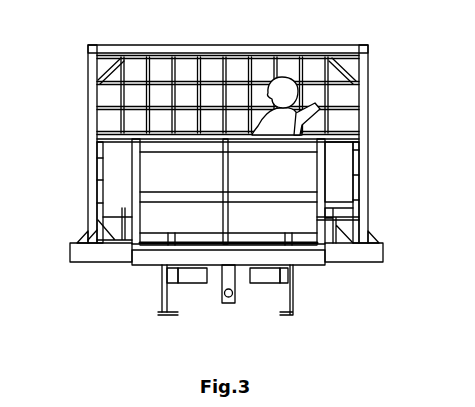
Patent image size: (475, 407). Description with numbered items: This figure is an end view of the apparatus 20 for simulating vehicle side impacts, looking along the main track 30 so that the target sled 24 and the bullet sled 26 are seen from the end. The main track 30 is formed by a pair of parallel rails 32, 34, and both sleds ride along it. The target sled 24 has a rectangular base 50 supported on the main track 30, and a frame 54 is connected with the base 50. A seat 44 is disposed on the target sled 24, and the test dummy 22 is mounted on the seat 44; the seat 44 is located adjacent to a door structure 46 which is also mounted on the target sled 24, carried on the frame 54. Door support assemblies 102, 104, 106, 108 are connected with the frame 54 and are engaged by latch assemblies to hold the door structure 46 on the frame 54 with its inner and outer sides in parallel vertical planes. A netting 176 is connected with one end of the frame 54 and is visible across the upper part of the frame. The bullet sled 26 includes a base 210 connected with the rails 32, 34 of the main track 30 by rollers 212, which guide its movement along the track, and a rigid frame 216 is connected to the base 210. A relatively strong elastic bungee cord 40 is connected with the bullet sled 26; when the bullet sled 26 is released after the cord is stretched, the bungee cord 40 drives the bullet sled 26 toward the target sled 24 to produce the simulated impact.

The apparatus 20 is at (383, 50).
The test dummy 22 is at (257, 126).
The target sled 24 is at (93, 45).
The bullet sled 26 is at (131, 188).
The main track 30 is at (157, 317).
The rail 32 is at (160, 300).
The rail 34 is at (295, 303).
The bungee cord 40 is at (222, 294).
The seat 44 is at (318, 104).
The door structure 46 is at (340, 168).
The rectangular base 50 is at (385, 254).
The frame 54 is at (178, 50).
The door support assembly 102 is at (360, 148).
The door support assembly 104 is at (357, 196).
The door support assembly 106 is at (105, 201).
The door support assembly 108 is at (97, 162).
The netting 176 is at (147, 100).
The base 210 is at (292, 268).
The rollers 212 is at (170, 271).
The rigid frame 216 is at (313, 220).